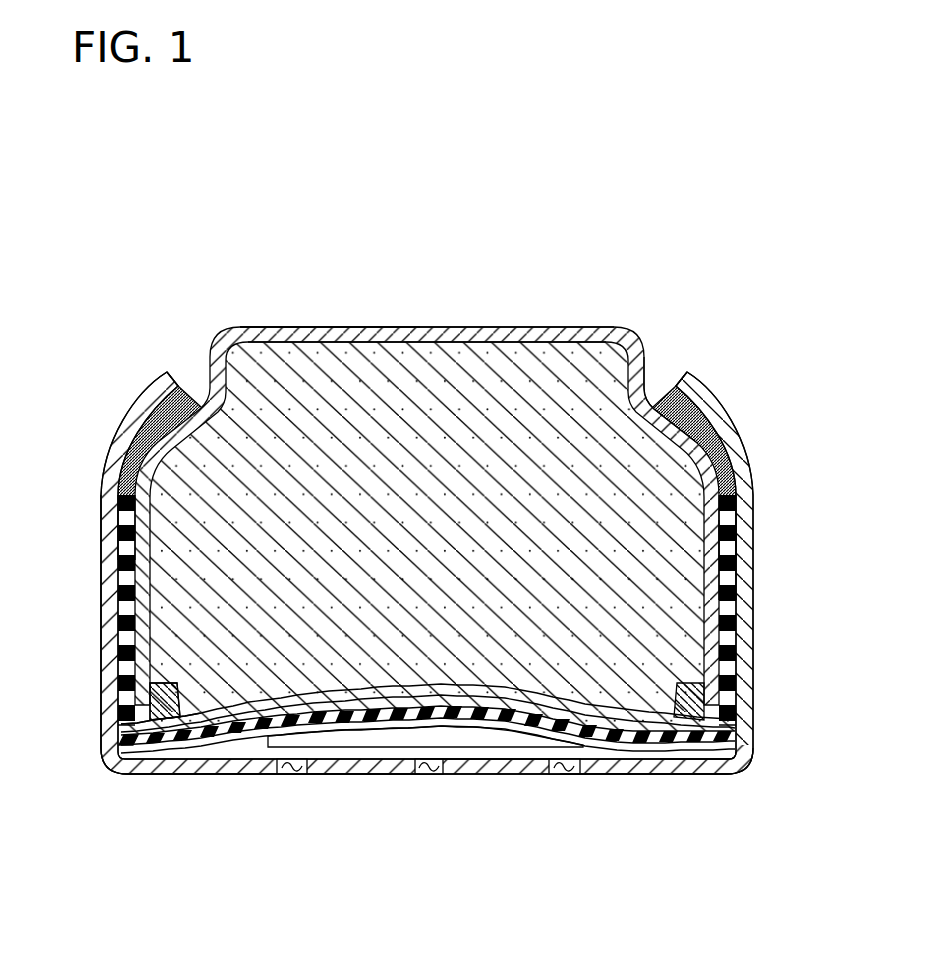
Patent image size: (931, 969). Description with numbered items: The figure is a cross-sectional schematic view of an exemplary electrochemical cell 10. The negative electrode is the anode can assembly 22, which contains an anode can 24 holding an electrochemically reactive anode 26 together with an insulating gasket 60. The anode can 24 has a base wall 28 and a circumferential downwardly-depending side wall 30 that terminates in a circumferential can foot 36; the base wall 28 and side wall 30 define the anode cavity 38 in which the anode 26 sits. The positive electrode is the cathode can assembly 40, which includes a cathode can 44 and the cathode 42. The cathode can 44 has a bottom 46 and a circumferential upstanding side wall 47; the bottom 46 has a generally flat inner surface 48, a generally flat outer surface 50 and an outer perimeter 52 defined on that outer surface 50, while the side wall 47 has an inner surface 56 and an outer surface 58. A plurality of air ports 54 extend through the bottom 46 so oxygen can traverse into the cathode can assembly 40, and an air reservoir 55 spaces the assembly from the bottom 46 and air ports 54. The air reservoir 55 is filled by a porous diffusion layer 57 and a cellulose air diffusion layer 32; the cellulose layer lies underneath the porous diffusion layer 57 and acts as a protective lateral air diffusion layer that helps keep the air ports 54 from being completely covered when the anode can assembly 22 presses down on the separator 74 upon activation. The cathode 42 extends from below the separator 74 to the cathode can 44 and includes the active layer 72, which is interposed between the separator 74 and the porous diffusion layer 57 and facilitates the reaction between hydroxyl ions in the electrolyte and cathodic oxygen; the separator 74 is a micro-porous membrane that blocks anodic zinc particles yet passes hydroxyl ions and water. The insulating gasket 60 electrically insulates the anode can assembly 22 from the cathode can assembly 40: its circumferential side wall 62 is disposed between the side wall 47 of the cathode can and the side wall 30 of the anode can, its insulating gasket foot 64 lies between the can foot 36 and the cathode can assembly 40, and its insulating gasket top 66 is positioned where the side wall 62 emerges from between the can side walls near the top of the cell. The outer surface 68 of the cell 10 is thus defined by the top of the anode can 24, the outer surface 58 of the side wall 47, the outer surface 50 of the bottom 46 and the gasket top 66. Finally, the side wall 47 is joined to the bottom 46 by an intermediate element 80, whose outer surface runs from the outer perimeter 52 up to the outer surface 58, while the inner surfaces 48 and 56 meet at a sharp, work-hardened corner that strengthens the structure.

The cell 10 is at (246, 299).
The anode can assembly 22 is at (582, 313).
The anode can 24 is at (521, 313).
The anode 26 is at (395, 668).
The base wall 28 is at (368, 327).
The side wall 30 is at (748, 488).
The cellulose air diffusion layer 32 is at (452, 725).
The can foot 36 is at (160, 712).
The anode cavity 38 is at (431, 411).
The cathode can assembly 40 is at (499, 790).
The cathode 42 is at (345, 741).
The cathode can 44 is at (619, 790).
The bottom 46 is at (691, 791).
The side wall 47 is at (86, 527).
The inner surface 48 is at (155, 745).
The outer surface 50 is at (217, 776).
The outer perimeter 52 is at (104, 772).
The air ports 54 is at (566, 775).
The air reservoir 55 is at (521, 740).
The inner surface 56 is at (737, 532).
The porous diffusion layer 57 is at (540, 726).
The outer surface 58 is at (753, 580).
The insulating gasket 60 is at (108, 472).
The side wall 62 is at (128, 568).
The insulating gasket foot 64 is at (708, 717).
The insulating gasket top 66 is at (652, 393).
The outer surface 68 is at (294, 313).
The active layer 72 is at (472, 712).
The separator 74 is at (192, 725).
The intermediate element 80 is at (750, 775).